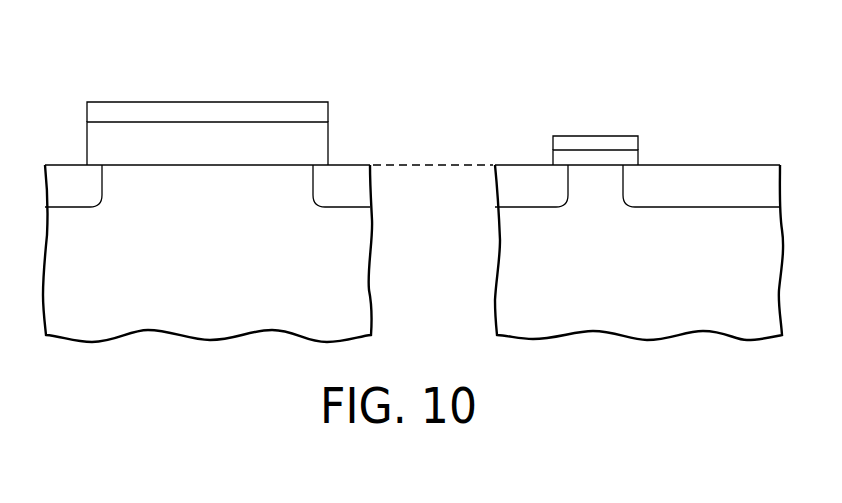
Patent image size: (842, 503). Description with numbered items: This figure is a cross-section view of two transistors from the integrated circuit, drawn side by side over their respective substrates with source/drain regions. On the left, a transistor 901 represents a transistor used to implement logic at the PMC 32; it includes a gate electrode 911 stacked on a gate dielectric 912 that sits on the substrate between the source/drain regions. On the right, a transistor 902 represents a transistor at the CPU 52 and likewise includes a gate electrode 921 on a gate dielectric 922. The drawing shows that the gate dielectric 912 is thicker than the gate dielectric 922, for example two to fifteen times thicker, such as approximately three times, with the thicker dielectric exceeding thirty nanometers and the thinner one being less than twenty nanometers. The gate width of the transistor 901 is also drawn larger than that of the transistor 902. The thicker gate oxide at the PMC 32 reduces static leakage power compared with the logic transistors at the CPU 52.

The transistor 901 is at (140, 57).
The transistor 902 is at (563, 92).
The PMC 32 is at (233, 44).
The CPU 52 is at (605, 79).
The gate electrode 911 is at (318, 113).
The gate dielectric 912 is at (321, 148).
The gate electrode 921 is at (633, 143).
The gate dielectric 922 is at (633, 158).